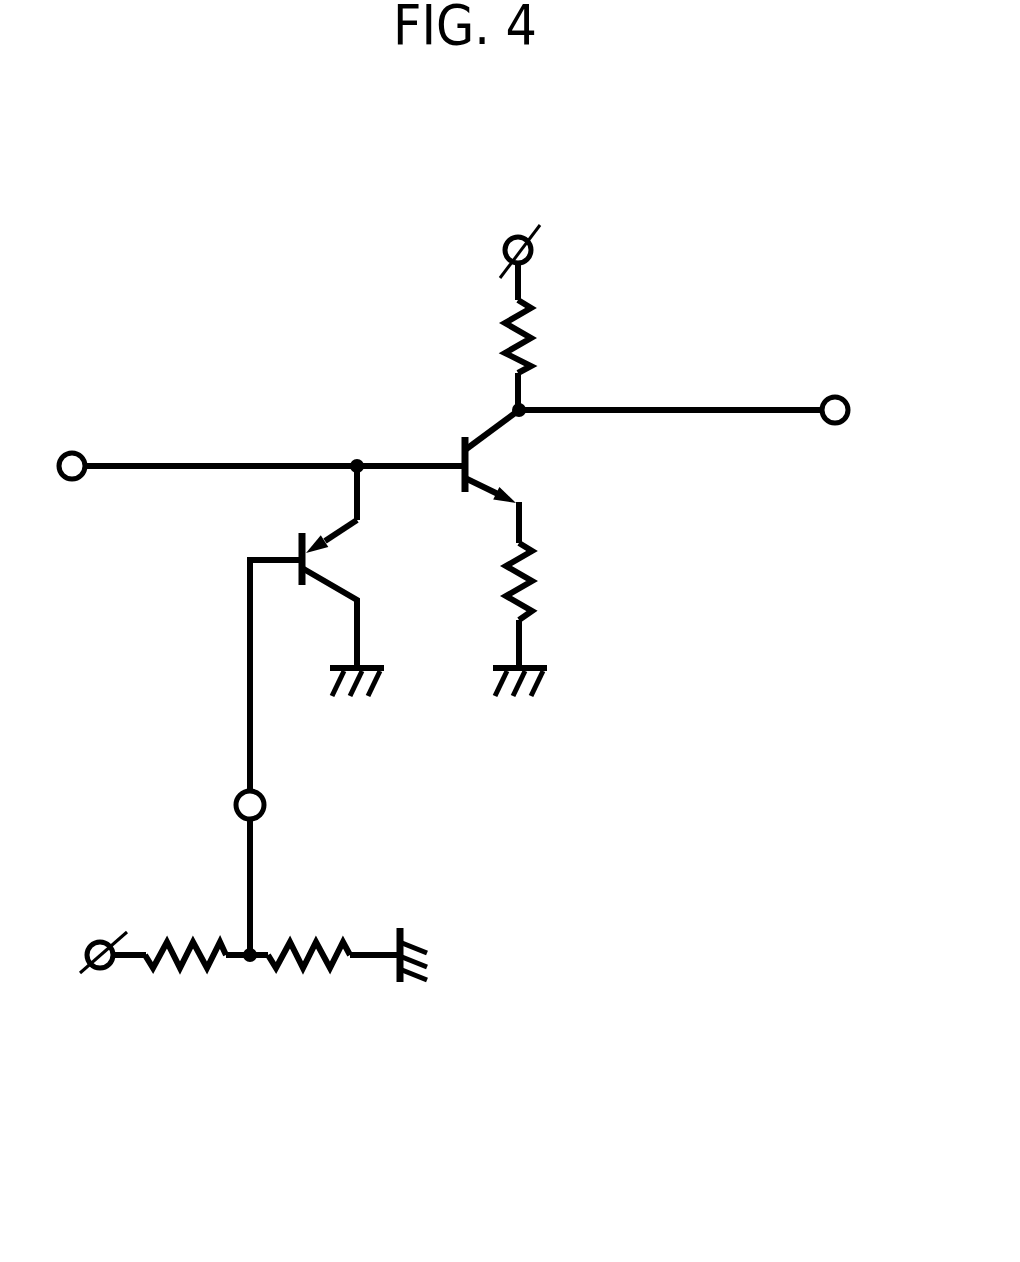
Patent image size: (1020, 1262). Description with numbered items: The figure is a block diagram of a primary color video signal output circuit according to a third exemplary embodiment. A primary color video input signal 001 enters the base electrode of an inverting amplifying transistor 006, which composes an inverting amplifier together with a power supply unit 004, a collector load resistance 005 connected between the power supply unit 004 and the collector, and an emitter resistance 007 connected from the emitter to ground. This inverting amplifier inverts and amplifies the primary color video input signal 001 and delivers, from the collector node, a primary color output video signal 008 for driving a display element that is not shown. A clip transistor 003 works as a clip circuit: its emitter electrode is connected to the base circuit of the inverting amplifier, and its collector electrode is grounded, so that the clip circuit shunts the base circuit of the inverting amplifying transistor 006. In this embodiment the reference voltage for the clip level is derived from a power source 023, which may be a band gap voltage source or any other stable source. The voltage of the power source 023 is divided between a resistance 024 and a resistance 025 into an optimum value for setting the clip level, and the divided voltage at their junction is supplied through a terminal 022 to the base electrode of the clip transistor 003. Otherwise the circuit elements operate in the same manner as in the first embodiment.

The primary color video input signal 001 is at (80, 453).
The clip transistor 003 is at (338, 587).
The power supply unit 004 is at (540, 238).
The collector load resistance 005 is at (528, 355).
The inverting amplifying transistor 006 is at (483, 477).
The emitter resistance 007 is at (530, 576).
The primary color output video signal 008 is at (843, 398).
The terminal 022 is at (262, 798).
The power source 023 is at (97, 970).
The resistance 024 is at (200, 960).
The resistance 025 is at (325, 960).